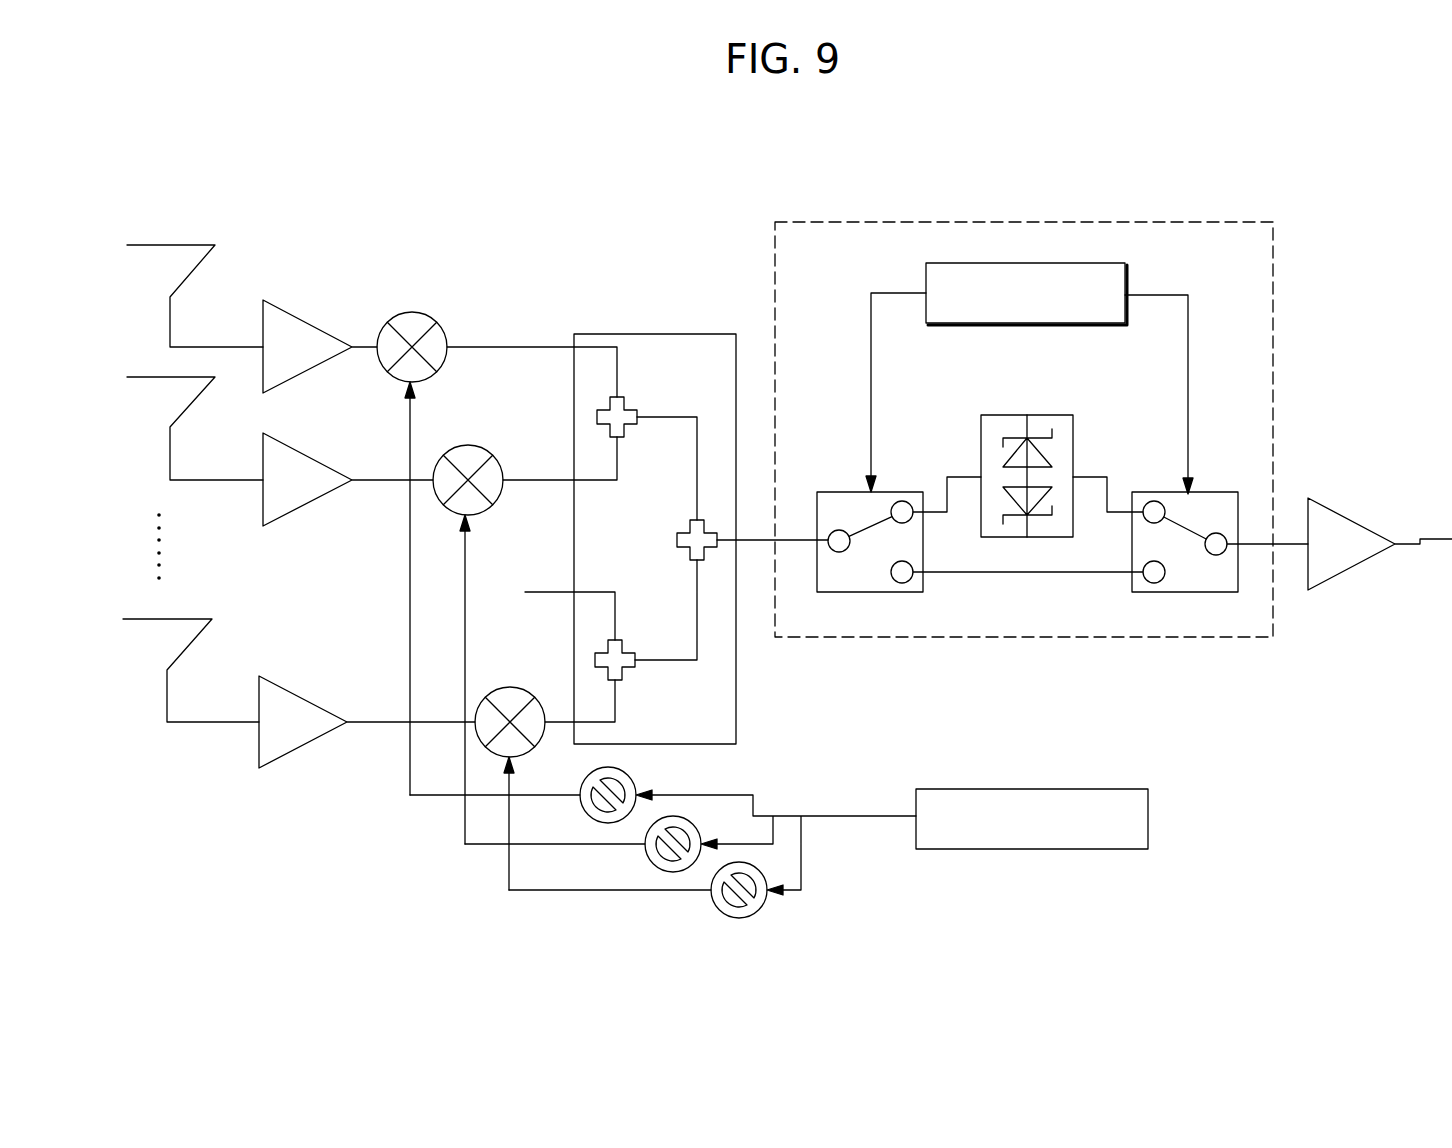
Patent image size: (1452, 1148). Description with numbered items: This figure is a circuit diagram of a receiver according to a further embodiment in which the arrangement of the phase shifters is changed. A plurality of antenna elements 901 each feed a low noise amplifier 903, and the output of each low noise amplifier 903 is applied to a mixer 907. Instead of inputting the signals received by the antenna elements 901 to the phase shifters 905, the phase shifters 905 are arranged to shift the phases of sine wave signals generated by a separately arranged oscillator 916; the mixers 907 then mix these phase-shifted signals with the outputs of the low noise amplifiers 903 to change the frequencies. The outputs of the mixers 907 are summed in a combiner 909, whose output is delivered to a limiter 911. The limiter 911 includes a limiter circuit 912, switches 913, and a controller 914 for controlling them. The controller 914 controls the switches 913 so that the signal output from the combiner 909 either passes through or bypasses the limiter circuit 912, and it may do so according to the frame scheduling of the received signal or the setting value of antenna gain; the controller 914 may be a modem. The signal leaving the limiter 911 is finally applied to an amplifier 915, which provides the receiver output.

The antenna element 901 is at (172, 245).
The low noise amplifier 903 is at (310, 317).
The phase shifter 905 is at (720, 911).
The mixer 907 is at (414, 312).
The combiner 909 is at (657, 334).
The limiter 911 is at (1203, 222).
The limiter circuit 912 is at (1073, 433).
The switches 913 is at (890, 592).
The controller 914 is at (1023, 263).
The amplifier 915 is at (1352, 517).
The oscillator 916 is at (1050, 789).